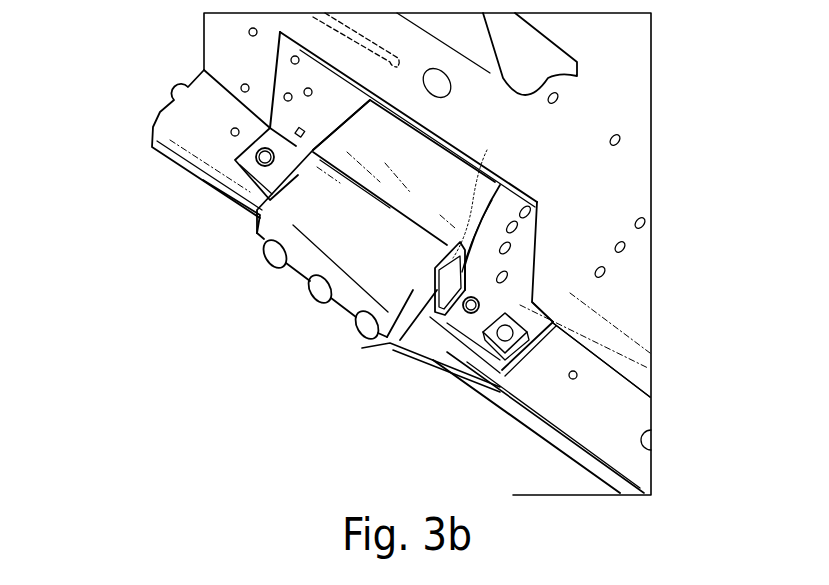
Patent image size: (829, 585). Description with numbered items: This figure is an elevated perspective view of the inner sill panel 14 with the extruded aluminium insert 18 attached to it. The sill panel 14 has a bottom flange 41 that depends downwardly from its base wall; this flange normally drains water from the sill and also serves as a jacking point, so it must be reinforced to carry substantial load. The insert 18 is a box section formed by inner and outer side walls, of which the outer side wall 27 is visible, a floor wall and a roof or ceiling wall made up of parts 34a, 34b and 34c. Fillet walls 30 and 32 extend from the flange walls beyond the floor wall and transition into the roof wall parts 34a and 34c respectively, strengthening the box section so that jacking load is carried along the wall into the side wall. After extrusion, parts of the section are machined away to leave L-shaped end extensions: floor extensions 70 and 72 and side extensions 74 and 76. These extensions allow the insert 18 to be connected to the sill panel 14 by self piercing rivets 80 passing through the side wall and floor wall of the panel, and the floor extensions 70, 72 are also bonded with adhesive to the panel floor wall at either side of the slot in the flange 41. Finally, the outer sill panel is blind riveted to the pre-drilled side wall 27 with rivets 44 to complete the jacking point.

The sill panel 14 is at (524, 412).
The insert 18 is at (284, 309).
The outer side wall 27 is at (363, 360).
The fillet wall 30 is at (535, 291).
The fillet wall 32 is at (467, 272).
The roof wall part 34a is at (400, 150).
The roof wall part 34b is at (378, 184).
The roof wall part 34c is at (330, 248).
The bottom flange 41 is at (233, 207).
The rivets 44 is at (322, 292).
The floor extension 70 is at (480, 325).
The floor extension 72 is at (245, 166).
The side extension 74 is at (300, 82).
The side extension 76 is at (462, 244).
The self piercing rivets 80 is at (255, 157).